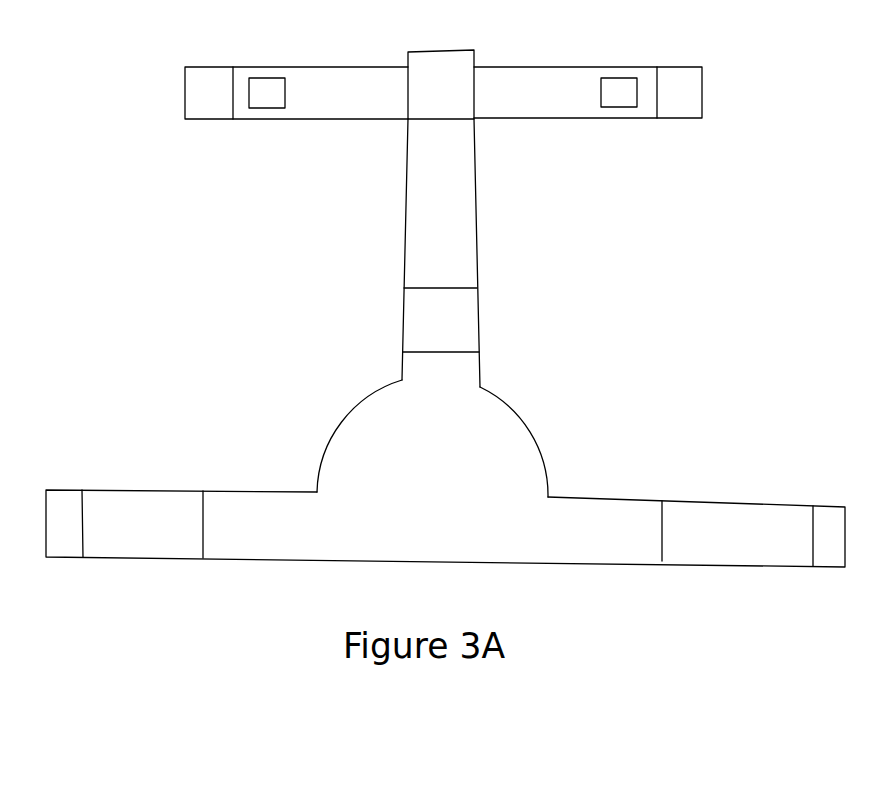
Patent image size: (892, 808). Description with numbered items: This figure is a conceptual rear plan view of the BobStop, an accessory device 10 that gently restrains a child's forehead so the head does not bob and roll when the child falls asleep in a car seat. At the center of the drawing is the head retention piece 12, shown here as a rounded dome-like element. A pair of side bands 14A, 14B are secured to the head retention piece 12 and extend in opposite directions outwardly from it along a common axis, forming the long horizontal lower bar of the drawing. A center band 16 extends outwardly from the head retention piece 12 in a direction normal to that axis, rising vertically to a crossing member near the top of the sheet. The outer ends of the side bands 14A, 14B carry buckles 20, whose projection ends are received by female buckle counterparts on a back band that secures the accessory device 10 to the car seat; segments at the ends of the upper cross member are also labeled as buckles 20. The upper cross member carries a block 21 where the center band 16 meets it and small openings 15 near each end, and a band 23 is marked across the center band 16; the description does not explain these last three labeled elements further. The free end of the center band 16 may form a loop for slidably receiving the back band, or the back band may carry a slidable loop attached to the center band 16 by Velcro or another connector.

The accessory device 10 is at (265, 590).
The head retention piece 12 is at (517, 448).
The side band 14A is at (163, 500).
The side band 14B is at (700, 512).
The apertures 15 is at (275, 102).
The center band 16 is at (465, 218).
The buckles 20 is at (200, 107).
The top cross member block 21 is at (458, 69).
The band on post 23 is at (467, 308).